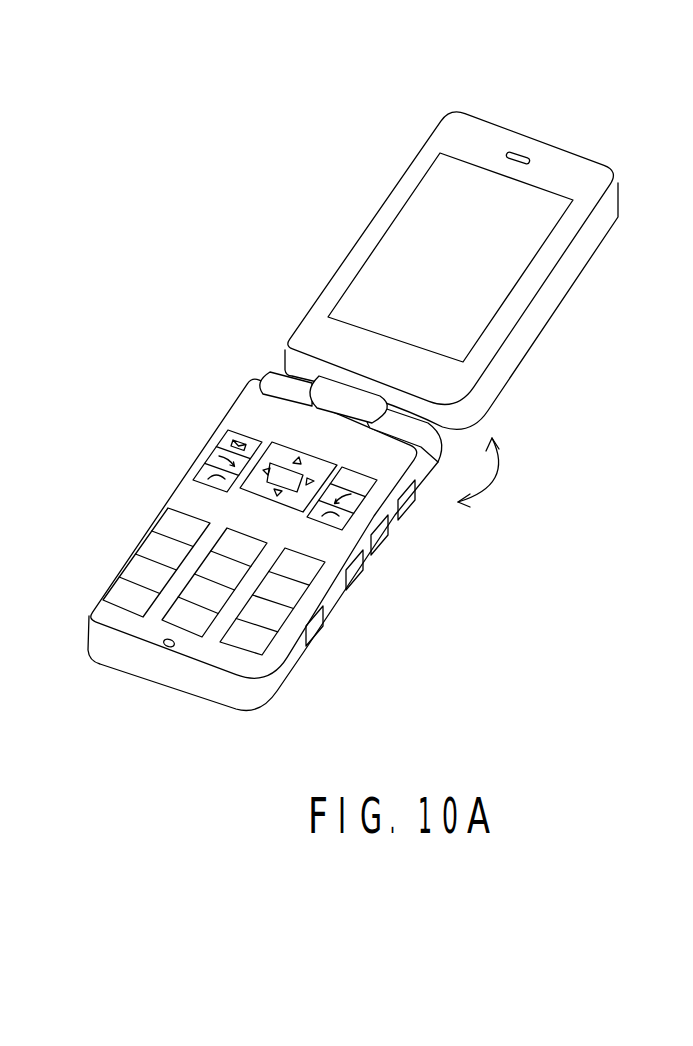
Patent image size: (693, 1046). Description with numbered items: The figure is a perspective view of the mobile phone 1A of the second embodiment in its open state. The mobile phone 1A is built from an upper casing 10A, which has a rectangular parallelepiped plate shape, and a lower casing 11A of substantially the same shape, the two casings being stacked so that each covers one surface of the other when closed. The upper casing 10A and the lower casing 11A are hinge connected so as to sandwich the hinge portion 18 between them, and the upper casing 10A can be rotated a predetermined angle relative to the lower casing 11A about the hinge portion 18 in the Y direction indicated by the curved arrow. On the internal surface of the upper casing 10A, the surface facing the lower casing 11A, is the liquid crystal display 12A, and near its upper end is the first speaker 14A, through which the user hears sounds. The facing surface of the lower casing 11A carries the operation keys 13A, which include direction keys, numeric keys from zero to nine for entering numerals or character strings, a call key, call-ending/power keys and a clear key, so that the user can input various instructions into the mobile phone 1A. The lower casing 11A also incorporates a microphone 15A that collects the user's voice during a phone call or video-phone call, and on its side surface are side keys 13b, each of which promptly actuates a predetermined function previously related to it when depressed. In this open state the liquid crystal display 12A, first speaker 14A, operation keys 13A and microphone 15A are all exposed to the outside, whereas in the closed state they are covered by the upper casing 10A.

The mobile phone 1A is at (383, 85).
The upper casing 10A is at (586, 168).
The lower casing 11A is at (280, 688).
The liquid crystal display 12A is at (381, 233).
The operation keys 13A is at (207, 471).
The side keys 13b is at (410, 498).
The first speaker 14A is at (521, 151).
The microphone 15A is at (163, 641).
The hinge portion 18 is at (270, 373).